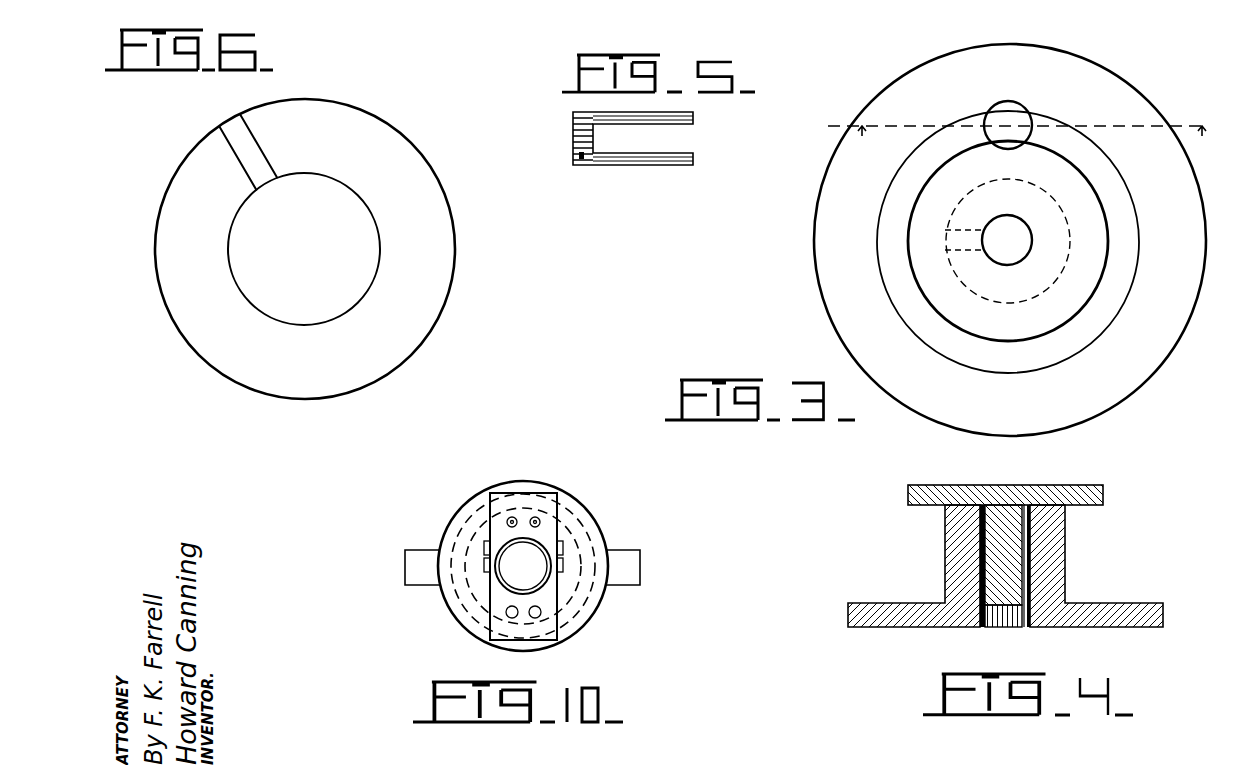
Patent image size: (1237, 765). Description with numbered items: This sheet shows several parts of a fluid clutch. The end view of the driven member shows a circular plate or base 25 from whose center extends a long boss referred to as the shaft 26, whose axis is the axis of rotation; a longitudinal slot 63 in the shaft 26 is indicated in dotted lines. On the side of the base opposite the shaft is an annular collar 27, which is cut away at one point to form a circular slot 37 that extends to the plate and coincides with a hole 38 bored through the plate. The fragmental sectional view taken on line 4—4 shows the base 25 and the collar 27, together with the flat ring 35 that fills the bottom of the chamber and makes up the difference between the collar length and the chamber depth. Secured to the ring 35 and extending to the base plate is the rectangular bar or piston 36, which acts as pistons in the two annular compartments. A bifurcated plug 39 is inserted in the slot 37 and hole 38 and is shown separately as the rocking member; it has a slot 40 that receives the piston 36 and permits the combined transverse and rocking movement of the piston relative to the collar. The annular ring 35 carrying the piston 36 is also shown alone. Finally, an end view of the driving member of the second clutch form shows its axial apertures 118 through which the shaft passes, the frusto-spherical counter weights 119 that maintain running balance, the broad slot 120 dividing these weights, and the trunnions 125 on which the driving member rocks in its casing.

In FIG. 3, the section line 4- 4 is at (1018, 145).
In FIG. 3, the circular plate or base 25 is at (830, 270).
In FIG. 4, the circular plate or base 25 is at (1135, 615).
In FIG. 3, the shaft 26 is at (1033, 285).
In FIG. 3, the annular collar 27 is at (888, 223).
In FIG. 6, the flat ring 35 is at (432, 237).
In FIG. 4, the flat ring 35 is at (1083, 492).
In FIG. 6, the piston (rectangular bar or boss) 36 is at (237, 133).
In FIG. 4, the piston (rectangular bar or boss) 36 is at (1012, 537).
In FIG. 3, the slot 37 is at (985, 120).
In FIG. 4, the slot 37 is at (980, 548).
In FIG. 3, the hole 38 is at (1012, 136).
In FIG. 5, the bifurcated plug 39 is at (583, 165).
In FIG. 4, the bifurcated plug 39 is at (1005, 615).
In FIG. 5, the slot 40 is at (645, 137).
In FIG. 3, the longitudinal slot 63 is at (972, 250).
In FIG. 10, the axial apertures 118 is at (535, 558).
In FIG. 10, the counter weights 119 is at (482, 585).
In FIG. 10, the broad slot 120 is at (527, 505).
In FIG. 10, the trunnion 125 is at (425, 555).